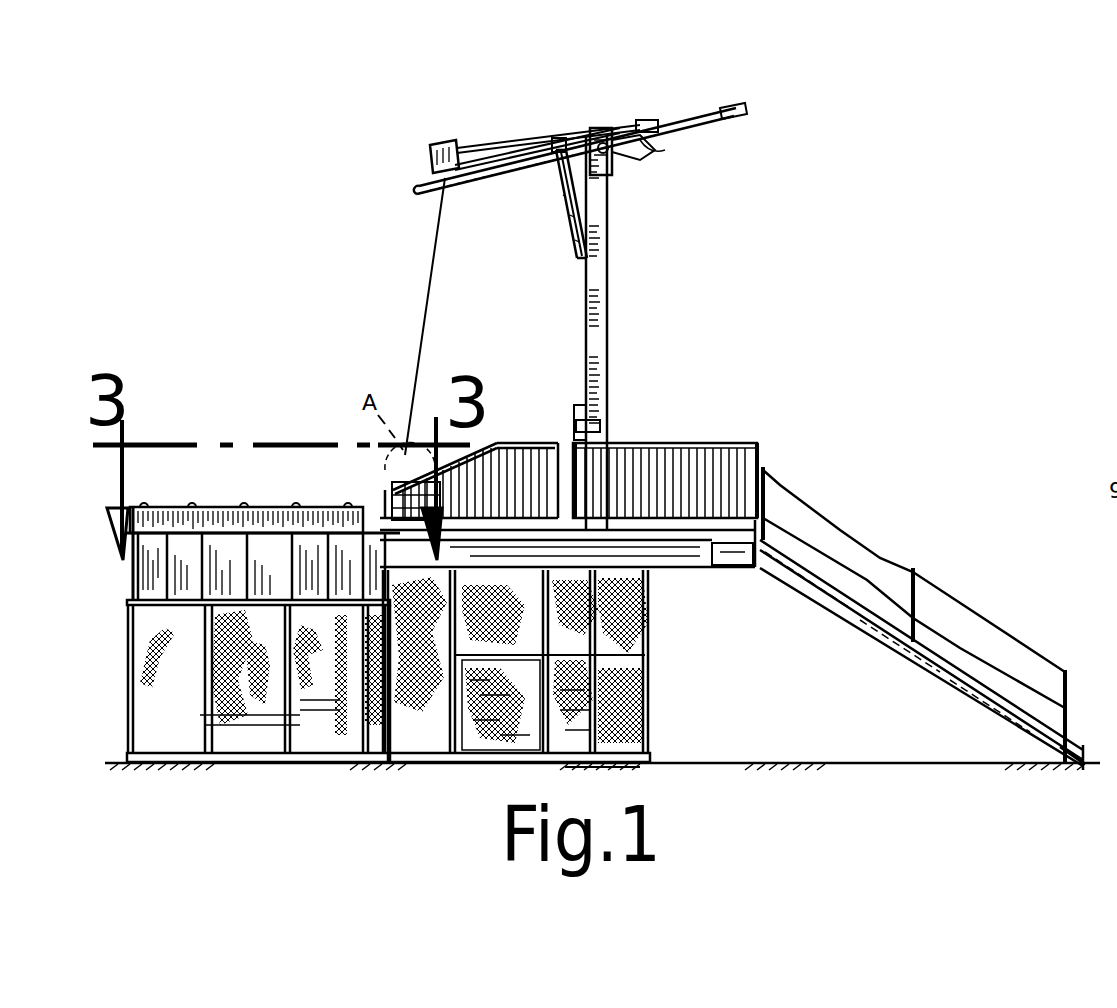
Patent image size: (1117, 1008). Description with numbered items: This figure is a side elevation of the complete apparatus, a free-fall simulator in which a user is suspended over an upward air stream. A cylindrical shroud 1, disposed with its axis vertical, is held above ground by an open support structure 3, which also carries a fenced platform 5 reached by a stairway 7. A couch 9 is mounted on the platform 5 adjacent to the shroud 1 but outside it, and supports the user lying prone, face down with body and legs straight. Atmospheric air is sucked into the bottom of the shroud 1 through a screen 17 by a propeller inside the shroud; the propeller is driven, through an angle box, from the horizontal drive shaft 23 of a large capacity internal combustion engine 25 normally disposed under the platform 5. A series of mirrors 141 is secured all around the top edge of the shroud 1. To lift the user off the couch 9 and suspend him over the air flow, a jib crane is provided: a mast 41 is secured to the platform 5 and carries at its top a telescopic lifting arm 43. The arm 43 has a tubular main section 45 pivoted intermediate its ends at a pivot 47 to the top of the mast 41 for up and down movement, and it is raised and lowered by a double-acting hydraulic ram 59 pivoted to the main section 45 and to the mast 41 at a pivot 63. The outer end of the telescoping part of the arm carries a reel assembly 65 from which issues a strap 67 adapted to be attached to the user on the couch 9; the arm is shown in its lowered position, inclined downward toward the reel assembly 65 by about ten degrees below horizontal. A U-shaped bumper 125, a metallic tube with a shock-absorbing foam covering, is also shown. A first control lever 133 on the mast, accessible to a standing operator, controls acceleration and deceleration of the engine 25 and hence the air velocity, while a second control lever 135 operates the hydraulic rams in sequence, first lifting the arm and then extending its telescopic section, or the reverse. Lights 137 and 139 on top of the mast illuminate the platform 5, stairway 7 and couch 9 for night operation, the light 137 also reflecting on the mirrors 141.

The cylindrical shroud 1 is at (206, 511).
The open support structure 3 is at (131, 740).
The fenced platform 5 is at (707, 532).
The stairway 7 is at (828, 596).
The couch 9 is at (403, 471).
The screen 17 is at (170, 725).
The horizontal drive shaft 23 is at (382, 735).
The internal combustion engine 25 is at (460, 720).
The mast 41 is at (605, 298).
The telescopic lifting arm 43 is at (684, 115).
The main section 45 is at (723, 111).
The pivot 47 is at (622, 138).
The double-acting hydraulic ram 59 is at (515, 150).
The pivot on mast 63 is at (580, 256).
The reel assembly 65 is at (432, 143).
The strap 67 is at (441, 298).
The U-shaped bumper 125 is at (476, 146).
The first control lever 133 is at (570, 410).
The second control lever 135 is at (573, 418).
The light 137 is at (580, 138).
The light 139 is at (652, 122).
The mirrors 141 is at (155, 510).